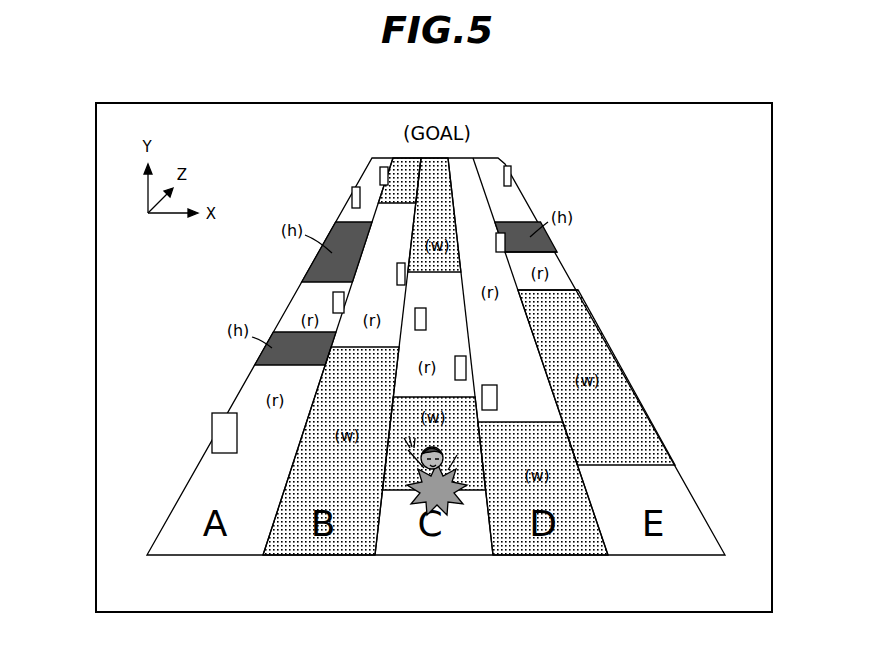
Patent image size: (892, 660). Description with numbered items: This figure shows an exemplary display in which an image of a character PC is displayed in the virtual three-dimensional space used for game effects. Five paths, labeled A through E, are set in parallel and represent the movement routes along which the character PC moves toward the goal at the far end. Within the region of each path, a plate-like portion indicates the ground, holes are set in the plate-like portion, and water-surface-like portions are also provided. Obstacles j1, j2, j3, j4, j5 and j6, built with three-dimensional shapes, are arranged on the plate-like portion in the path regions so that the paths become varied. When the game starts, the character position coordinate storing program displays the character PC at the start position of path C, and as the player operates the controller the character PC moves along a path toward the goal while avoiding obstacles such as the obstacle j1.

The obstacle j1 is at (212, 430).
The obstacle j2 is at (494, 393).
The obstacle j3 is at (455, 362).
The obstacle j4 is at (426, 313).
The obstacle j5 is at (397, 272).
The obstacle j6 is at (352, 192).
The character PC is at (444, 470).